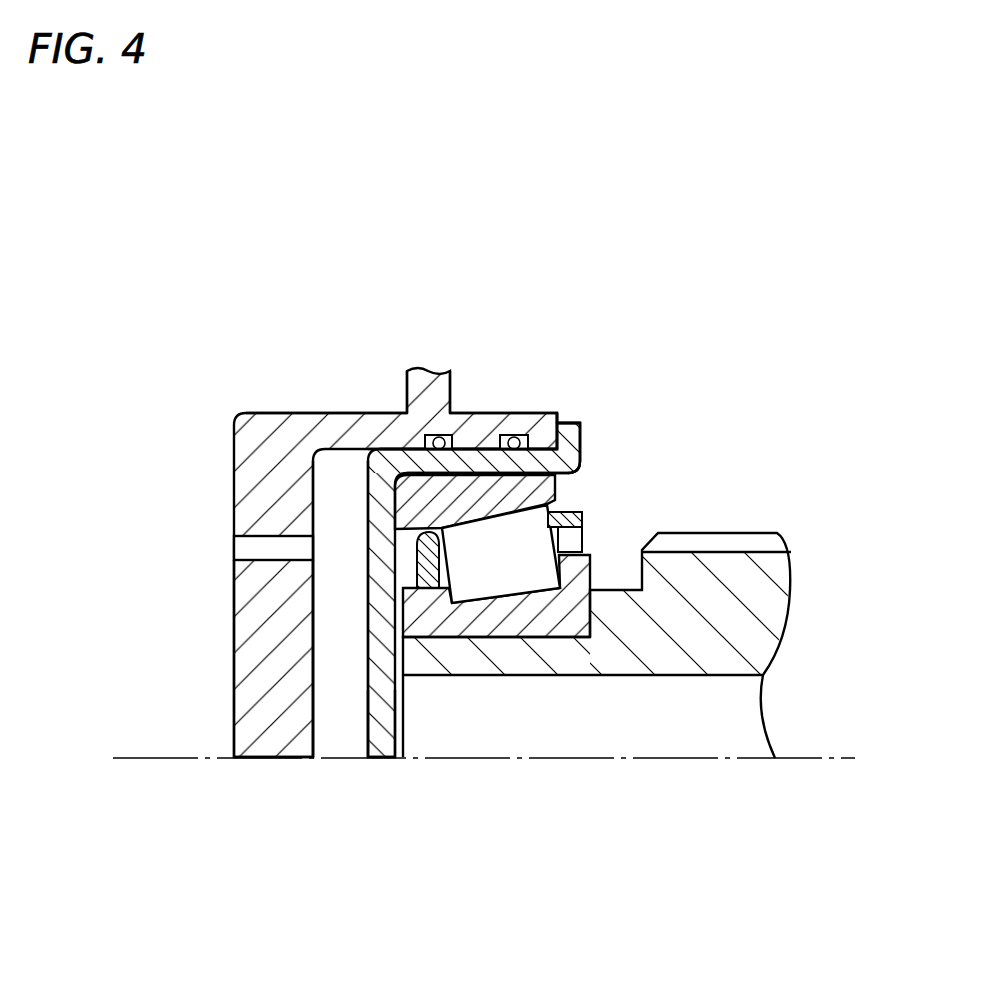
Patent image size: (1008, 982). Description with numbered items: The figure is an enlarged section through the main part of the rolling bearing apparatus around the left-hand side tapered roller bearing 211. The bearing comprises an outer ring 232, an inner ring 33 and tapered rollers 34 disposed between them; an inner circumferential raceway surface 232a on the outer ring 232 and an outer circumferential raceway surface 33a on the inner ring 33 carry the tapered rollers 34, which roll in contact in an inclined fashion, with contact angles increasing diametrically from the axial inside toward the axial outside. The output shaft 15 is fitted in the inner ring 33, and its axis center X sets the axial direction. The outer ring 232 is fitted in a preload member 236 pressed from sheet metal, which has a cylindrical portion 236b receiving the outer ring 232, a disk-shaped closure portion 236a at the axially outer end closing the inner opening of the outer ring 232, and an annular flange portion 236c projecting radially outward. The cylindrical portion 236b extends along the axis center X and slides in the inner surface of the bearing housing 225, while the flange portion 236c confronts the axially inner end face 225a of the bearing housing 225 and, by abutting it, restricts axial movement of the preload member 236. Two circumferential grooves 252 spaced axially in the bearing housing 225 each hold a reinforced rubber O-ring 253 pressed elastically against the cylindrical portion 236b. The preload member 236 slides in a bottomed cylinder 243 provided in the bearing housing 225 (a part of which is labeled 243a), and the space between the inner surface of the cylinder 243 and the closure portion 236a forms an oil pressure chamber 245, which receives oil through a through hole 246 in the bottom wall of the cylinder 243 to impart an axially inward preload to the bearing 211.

The output shaft 15 is at (747, 613).
The inner ring 33 is at (572, 622).
The outer circumferential raceway surface 33a is at (485, 600).
The tapered rollers 34 is at (550, 513).
The left-hand side tapered roller bearing 211 is at (597, 417).
The bearing housing 225 is at (293, 412).
The axially inner end face of the bearing housing 225a is at (563, 427).
The outer ring 232 is at (540, 488).
The inner circumferential raceway surface 232a is at (468, 518).
The preload member 236 is at (368, 692).
The closure portion 236a is at (378, 740).
The cylindrical portion 236b is at (415, 450).
The flange portion 236c is at (585, 440).
The cylinder 243 is at (243, 415).
The lower housing wall 243a is at (240, 668).
The oil pressure chamber 245 is at (357, 740).
The through hole 246 is at (236, 545).
The circumferential grooves 252 is at (423, 437).
The O-ring 253 is at (436, 437).
The axis center X is at (200, 758).